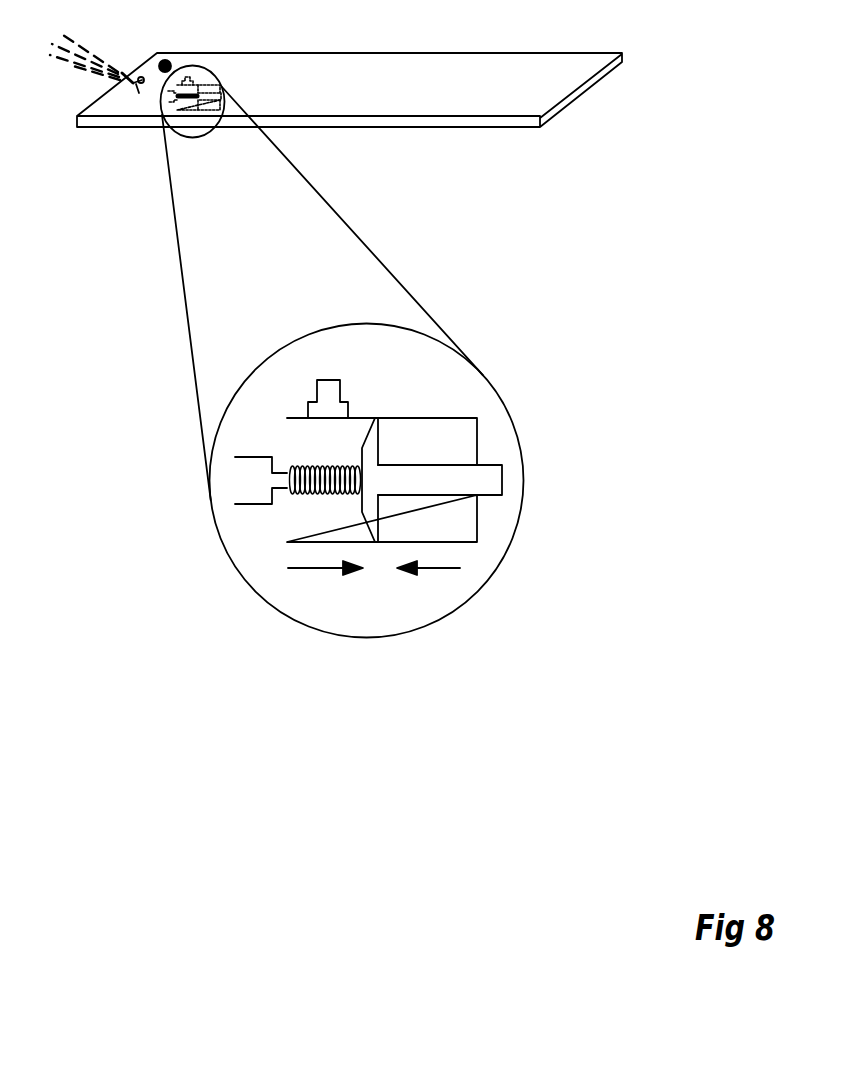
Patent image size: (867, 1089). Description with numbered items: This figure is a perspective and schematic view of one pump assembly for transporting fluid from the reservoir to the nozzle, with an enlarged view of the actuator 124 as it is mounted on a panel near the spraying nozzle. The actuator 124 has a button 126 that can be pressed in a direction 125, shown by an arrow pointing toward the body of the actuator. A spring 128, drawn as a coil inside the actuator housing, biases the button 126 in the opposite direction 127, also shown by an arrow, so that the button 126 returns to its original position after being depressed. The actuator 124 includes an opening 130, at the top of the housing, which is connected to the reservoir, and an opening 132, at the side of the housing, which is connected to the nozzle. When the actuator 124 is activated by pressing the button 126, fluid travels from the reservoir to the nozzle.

The actuator 124 is at (443, 344).
The direction 125 is at (430, 573).
The button 126 is at (502, 478).
The direction 127 is at (320, 570).
The spring 128 is at (308, 492).
The opening 130 is at (328, 388).
The opening 132 is at (248, 477).